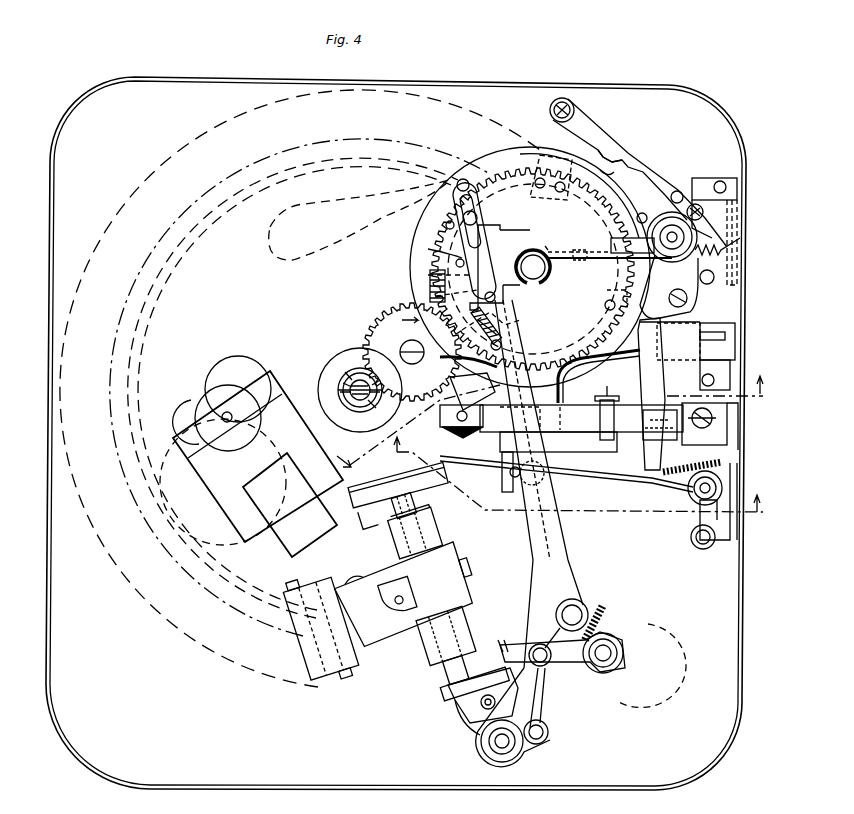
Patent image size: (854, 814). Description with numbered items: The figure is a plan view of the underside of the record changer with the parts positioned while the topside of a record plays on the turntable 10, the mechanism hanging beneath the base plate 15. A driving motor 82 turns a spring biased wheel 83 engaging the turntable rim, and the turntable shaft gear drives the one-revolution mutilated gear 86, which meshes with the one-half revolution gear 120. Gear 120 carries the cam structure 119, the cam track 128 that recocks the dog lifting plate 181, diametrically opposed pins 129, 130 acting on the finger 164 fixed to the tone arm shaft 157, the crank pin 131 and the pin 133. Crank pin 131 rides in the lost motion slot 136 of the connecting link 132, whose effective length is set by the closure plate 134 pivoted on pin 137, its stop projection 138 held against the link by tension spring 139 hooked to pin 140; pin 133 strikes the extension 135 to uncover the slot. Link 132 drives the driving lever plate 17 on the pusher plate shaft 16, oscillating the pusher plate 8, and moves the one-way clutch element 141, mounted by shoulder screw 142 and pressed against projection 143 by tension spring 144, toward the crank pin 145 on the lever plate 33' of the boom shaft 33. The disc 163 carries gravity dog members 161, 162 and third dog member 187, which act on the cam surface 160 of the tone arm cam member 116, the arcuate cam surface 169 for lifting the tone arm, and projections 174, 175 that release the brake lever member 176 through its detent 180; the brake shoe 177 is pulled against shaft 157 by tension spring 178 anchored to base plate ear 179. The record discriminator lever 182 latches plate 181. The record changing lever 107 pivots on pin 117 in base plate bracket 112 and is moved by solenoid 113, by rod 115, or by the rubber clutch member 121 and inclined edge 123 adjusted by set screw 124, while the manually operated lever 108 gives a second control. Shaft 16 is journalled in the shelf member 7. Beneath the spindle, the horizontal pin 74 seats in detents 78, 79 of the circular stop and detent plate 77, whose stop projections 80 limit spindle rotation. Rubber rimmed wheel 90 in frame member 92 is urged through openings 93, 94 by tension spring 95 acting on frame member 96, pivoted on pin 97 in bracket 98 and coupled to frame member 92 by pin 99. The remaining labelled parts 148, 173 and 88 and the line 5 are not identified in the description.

The base plate 15 is at (396, 433).
The turntable 10 is at (150, 314).
The cam 148 is at (324, 196).
The one-half revolution disc 163 is at (500, 148).
The sector 173 is at (623, 212).
The disc projection 174 is at (610, 176).
The one-half revolution gear 120 is at (533, 269).
The closure plate extension 135 is at (533, 249).
The stop projection 138 is at (518, 228).
The closure plate 134 is at (500, 267).
The pin 137 is at (497, 297).
The crank pin 131 is at (486, 216).
The lost motion slot 136 is at (470, 190).
The pin 129 is at (452, 219).
The third dog member 187 is at (436, 232).
The pin 133 is at (428, 249).
The arcuate-shaped cam surface 169 is at (428, 275).
The dog member 162 is at (430, 296).
The pin 140 is at (503, 340).
The tension spring 139 is at (500, 325).
The cam track 128 is at (525, 338).
The pin 130 is at (604, 306).
The dog member 161 is at (603, 250).
The finger 164 is at (620, 262).
The cam structure 119 is at (548, 152).
The brake lever member 176 is at (646, 152).
The detent 180 is at (614, 160).
The brake shoe 177 is at (677, 190).
The tone arm vertical shaft 157 is at (672, 262).
The tension spring 178 is at (740, 238).
The record discriminator lever 182 is at (712, 330).
The base plate ear 179 is at (670, 352).
The tone arm extension 116 is at (655, 380).
The cam surface 160 is at (618, 330).
The dog lifting plate 181 is at (504, 390).
The disc projection 175 is at (462, 368).
The automatically operated record changing lever 107 is at (581, 418).
The pin 117 is at (608, 394).
The base plate bracket 112 is at (603, 452).
The egg shaped rubber clutch member 121 is at (660, 440).
The solenoid 113 is at (460, 440).
The set screw 124 is at (704, 424).
The inclined edge 123 is at (730, 405).
The manually operated record changing lever 108 is at (680, 492).
The section line 5- 5 is at (545, 413).
The U-shaped shelf member 7 is at (574, 488).
The mutilated gear 86 is at (376, 320).
The circular stop and detent plate 77 is at (357, 380).
The horizontal pin 74 is at (352, 405).
The detents 78 is at (330, 400).
The detents 79 is at (358, 391).
The stop projections 80 is at (357, 386).
The driving motor 82 is at (258, 456).
The spring biased wheel 83 is at (222, 548).
The bar 88 is at (440, 487).
The frame member 92 is at (405, 536).
The opening 93 is at (365, 531).
The frame member 96 is at (400, 585).
The pin 97 is at (312, 617).
The bracket 98 is at (324, 684).
The tension spring 95 is at (402, 609).
The pin 99 is at (478, 553).
The opening 94 is at (451, 658).
The rubber rimmed wheel 90 is at (450, 700).
The connecting link 132 is at (539, 484).
The lever plate projection 143 is at (572, 631).
The tension spring 144 is at (615, 632).
The shoulder screw 142 is at (534, 648).
The pusher plate shaft 16 is at (602, 668).
The driving lever plate 17 is at (594, 625).
The pusher plate 8 is at (682, 649).
The one-way spring biased clutch element 141 is at (500, 640).
The rod 115 is at (545, 690).
The crank pin 145 is at (549, 732).
The boom shaft 33 is at (502, 752).
The lever plate 33' is at (528, 718).